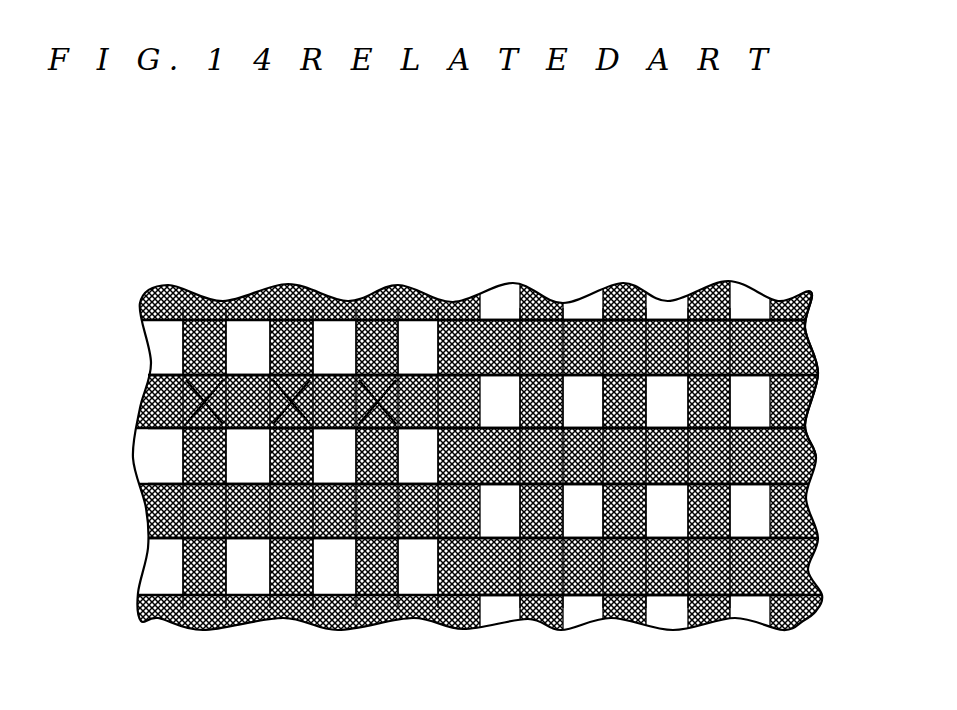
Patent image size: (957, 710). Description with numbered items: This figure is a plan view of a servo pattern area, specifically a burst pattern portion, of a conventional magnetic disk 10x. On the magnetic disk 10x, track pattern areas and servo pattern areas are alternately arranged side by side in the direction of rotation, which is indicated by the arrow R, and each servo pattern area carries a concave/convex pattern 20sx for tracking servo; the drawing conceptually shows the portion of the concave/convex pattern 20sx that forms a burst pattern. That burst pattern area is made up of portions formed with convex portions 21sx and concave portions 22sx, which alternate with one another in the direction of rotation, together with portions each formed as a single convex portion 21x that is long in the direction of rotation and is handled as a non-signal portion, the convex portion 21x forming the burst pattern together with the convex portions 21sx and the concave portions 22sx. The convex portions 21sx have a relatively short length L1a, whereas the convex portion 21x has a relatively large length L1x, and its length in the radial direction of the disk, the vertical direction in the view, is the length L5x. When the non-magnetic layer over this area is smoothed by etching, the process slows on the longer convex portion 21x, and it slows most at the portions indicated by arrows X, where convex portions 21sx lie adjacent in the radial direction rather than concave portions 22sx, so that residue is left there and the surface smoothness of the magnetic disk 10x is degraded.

The magnetic disk 10x is at (470, 625).
The convex portion 21x is at (142, 386).
The convex portions 21sx is at (376, 333).
The concave portions 22sx is at (322, 337).
The concave/convex pattern 20sx is at (701, 268).
The portions indicated by arrows X is at (348, 449).
The length of convex portion 21x L1x is at (108, 227).
The length of convex portions 21sx L1a is at (255, 265).
The length of convex portion 21x in radial direction L5x is at (840, 283).
The direction of rotation R is at (607, 206).